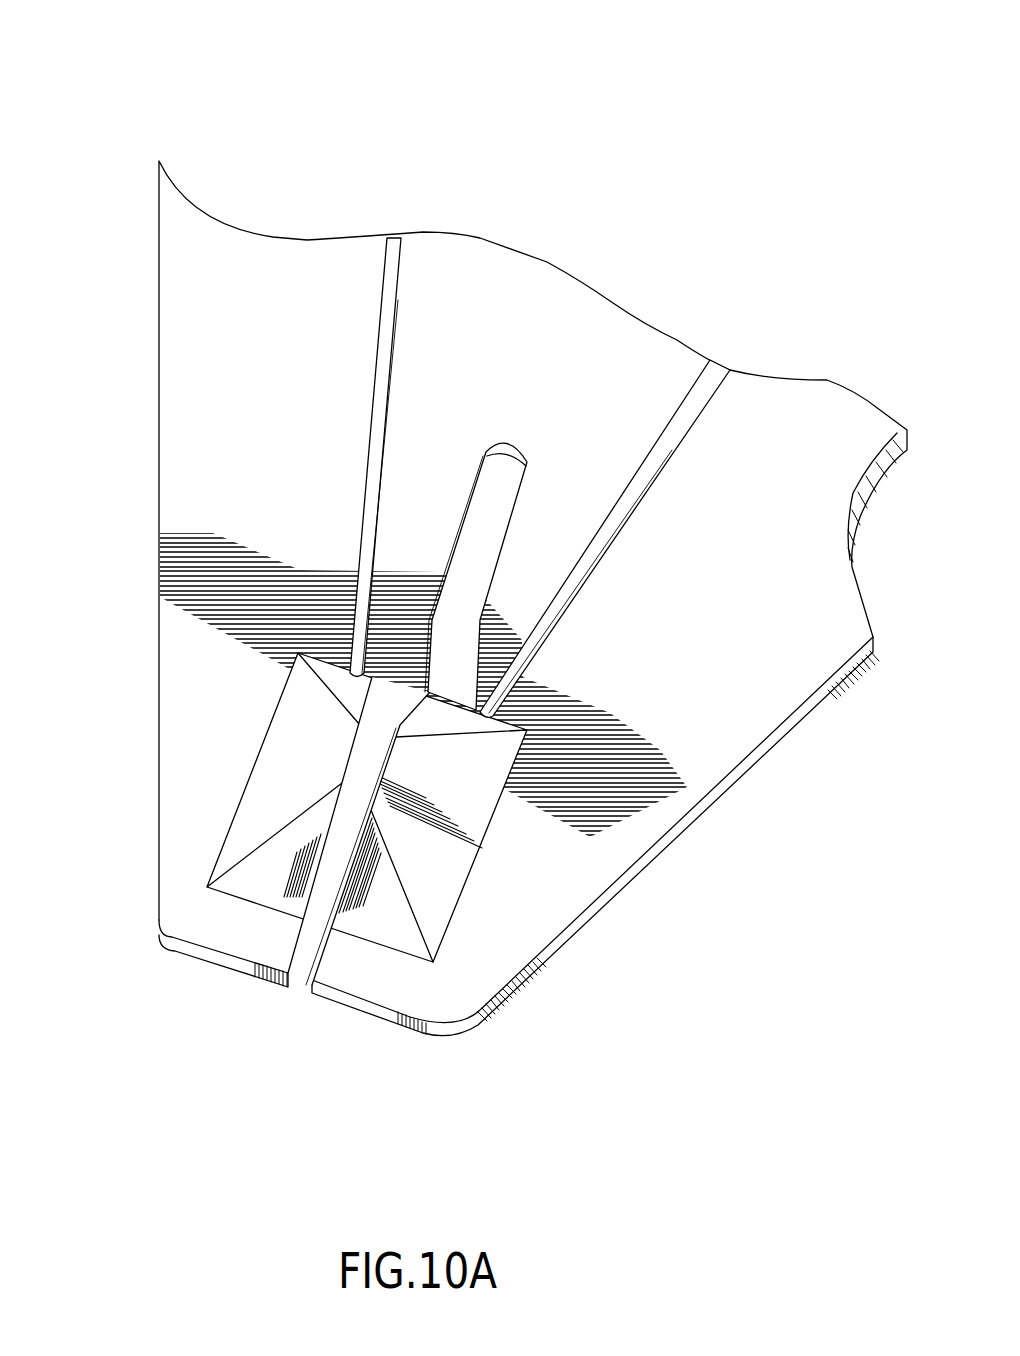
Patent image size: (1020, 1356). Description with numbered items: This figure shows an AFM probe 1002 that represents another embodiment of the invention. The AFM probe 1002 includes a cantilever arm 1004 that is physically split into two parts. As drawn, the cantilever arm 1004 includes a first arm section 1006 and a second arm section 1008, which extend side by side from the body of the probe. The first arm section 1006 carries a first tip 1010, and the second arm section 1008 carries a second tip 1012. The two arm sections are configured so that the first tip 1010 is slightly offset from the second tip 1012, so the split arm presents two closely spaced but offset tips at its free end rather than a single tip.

The AFM probe 1002 is at (286, 156).
The cantilever arm 1004 is at (527, 351).
The first arm section 1006 is at (590, 840).
The second arm section 1008 is at (196, 738).
The first tip 1010 is at (397, 917).
The second tip 1012 is at (262, 867).